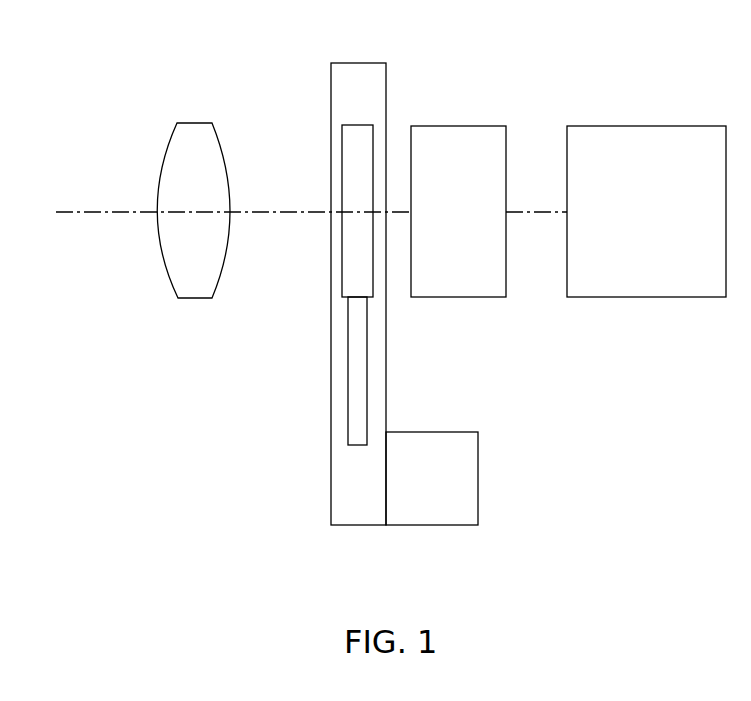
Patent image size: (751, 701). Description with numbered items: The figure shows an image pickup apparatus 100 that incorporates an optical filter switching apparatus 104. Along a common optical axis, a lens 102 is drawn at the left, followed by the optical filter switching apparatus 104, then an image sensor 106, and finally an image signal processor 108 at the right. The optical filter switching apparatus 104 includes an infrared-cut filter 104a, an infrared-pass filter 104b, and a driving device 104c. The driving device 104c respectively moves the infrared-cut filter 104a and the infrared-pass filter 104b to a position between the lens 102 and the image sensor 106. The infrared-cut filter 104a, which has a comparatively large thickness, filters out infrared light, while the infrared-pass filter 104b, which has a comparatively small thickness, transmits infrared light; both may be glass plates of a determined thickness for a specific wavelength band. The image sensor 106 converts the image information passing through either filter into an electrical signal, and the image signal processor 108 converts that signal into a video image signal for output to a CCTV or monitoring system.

The image pickup apparatus 100 is at (93, 34).
The lens 102 is at (173, 172).
The optical filter switching apparatus 104 is at (330, 464).
The infrared-cut filter 104a is at (346, 176).
The infrared-pass filter 104b is at (354, 379).
The driving device 104c is at (459, 486).
The image sensor 106 is at (473, 219).
The image signal processor 108 is at (663, 219).